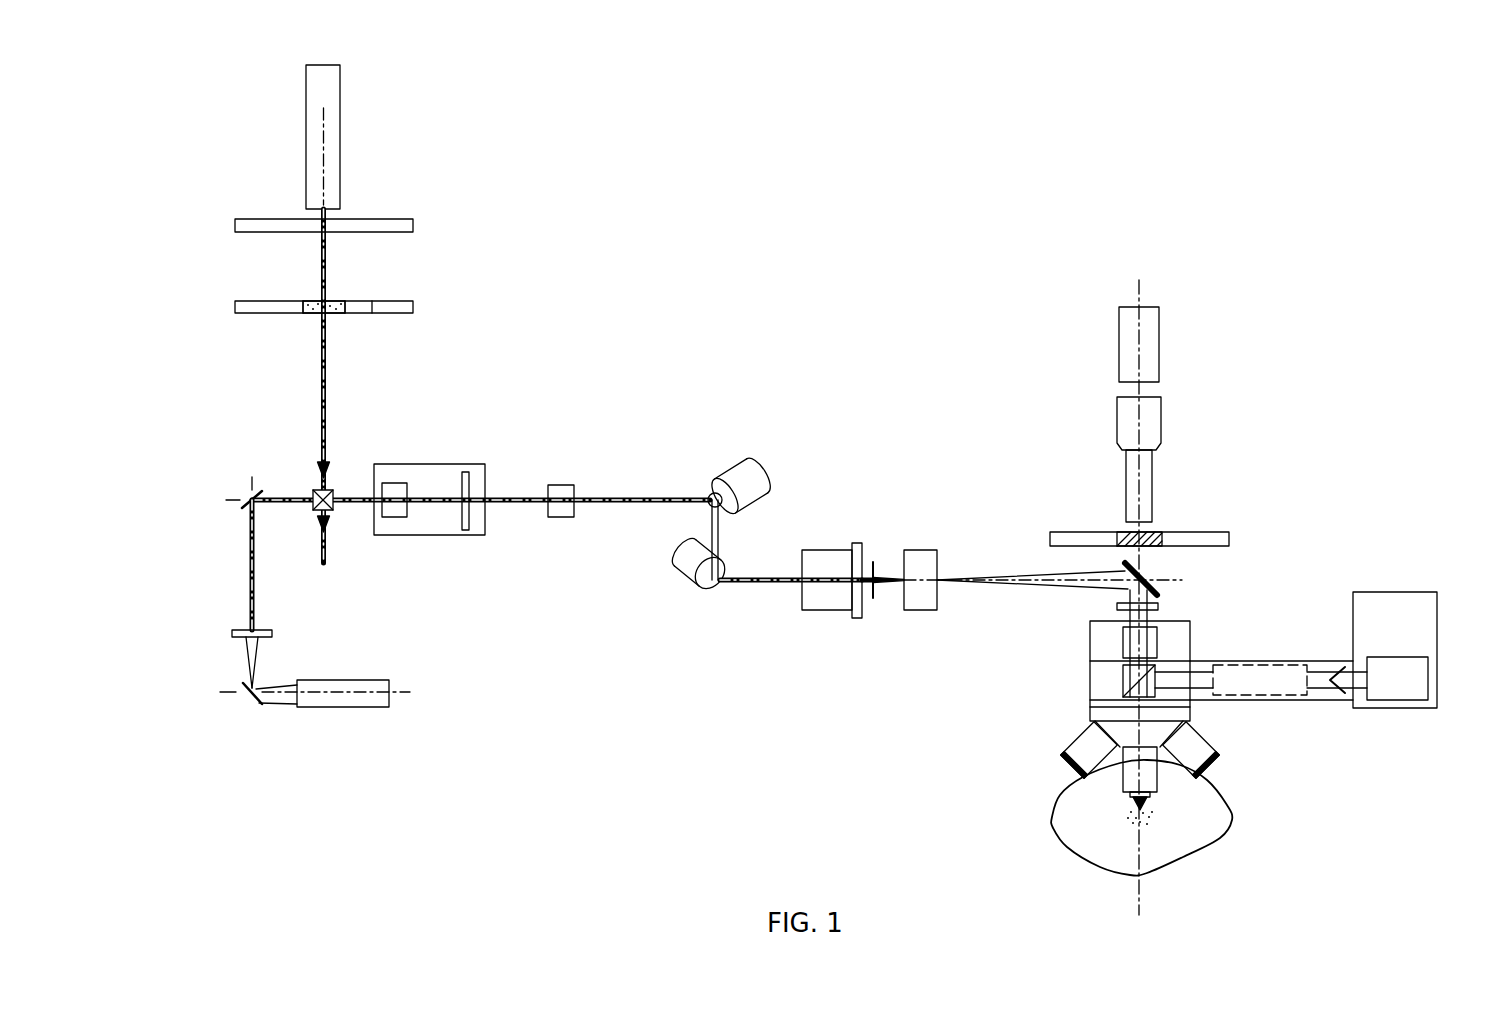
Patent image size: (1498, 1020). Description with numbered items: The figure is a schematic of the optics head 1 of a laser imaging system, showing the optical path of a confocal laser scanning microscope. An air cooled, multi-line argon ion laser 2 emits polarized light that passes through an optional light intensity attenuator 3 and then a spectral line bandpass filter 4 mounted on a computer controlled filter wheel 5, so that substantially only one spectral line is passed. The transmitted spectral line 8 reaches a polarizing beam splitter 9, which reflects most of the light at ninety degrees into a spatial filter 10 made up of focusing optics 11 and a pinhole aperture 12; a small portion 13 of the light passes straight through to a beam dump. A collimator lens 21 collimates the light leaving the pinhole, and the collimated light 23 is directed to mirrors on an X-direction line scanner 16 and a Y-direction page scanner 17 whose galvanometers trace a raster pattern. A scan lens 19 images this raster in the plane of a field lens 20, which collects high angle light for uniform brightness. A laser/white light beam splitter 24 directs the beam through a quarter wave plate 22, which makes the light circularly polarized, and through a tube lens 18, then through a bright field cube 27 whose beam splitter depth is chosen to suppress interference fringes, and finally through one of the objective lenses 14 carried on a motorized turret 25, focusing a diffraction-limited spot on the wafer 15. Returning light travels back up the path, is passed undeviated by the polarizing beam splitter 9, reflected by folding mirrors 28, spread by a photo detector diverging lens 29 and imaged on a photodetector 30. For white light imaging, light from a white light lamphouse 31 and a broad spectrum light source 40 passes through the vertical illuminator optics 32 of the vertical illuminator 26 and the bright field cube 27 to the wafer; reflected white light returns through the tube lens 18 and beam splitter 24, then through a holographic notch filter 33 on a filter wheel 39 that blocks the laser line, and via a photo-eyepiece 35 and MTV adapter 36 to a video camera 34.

The optics head 1 is at (784, 219).
The argon ion laser 2 is at (341, 122).
The light intensity attenuator 3 is at (410, 219).
The spectral line bandpass filter 4 is at (340, 300).
The filter wheel 5 is at (400, 300).
The transmitted spectral line 8 is at (327, 368).
The polarizing beam splitter 9 is at (313, 492).
The spatial filter 10 is at (440, 464).
The focusing optics 11 is at (395, 483).
The pinhole aperture 12 is at (466, 530).
The small portion of laser light 13 is at (326, 568).
The objective lenses 14 is at (1122, 763).
The wafer 15 is at (1232, 822).
The X-direction line scanner 16 is at (700, 583).
The Y-direction page scanner 17 is at (755, 475).
The tube lens 18 is at (1118, 638).
The scan lens 19 is at (826, 612).
The field lens 20 is at (922, 550).
The collimator lens 21 is at (561, 518).
The quarter wave plate 22 is at (1117, 605).
The collimated light 23 is at (639, 497).
The laser/white light beam splitter 24 is at (1150, 570).
The motorized turret 25 is at (1195, 718).
The vertical illuminator 26 is at (1299, 716).
The bright field cube 27 is at (1118, 678).
The folding mirrors 28 is at (243, 688).
The photo detector diverging lens 29 is at (272, 634).
The photodetector 30 is at (345, 707).
The white light lamphouse 31 is at (1395, 592).
The vertical illuminator optics 32 is at (1262, 665).
The holographic notch filter 33 is at (1158, 532).
The video camera 34 is at (1118, 340).
The photo-eyepiece 35 is at (1152, 457).
The MTV adapter 36 is at (1162, 416).
The filter wheel 39 is at (1080, 532).
The broad spectrum light source 40 is at (1437, 678).